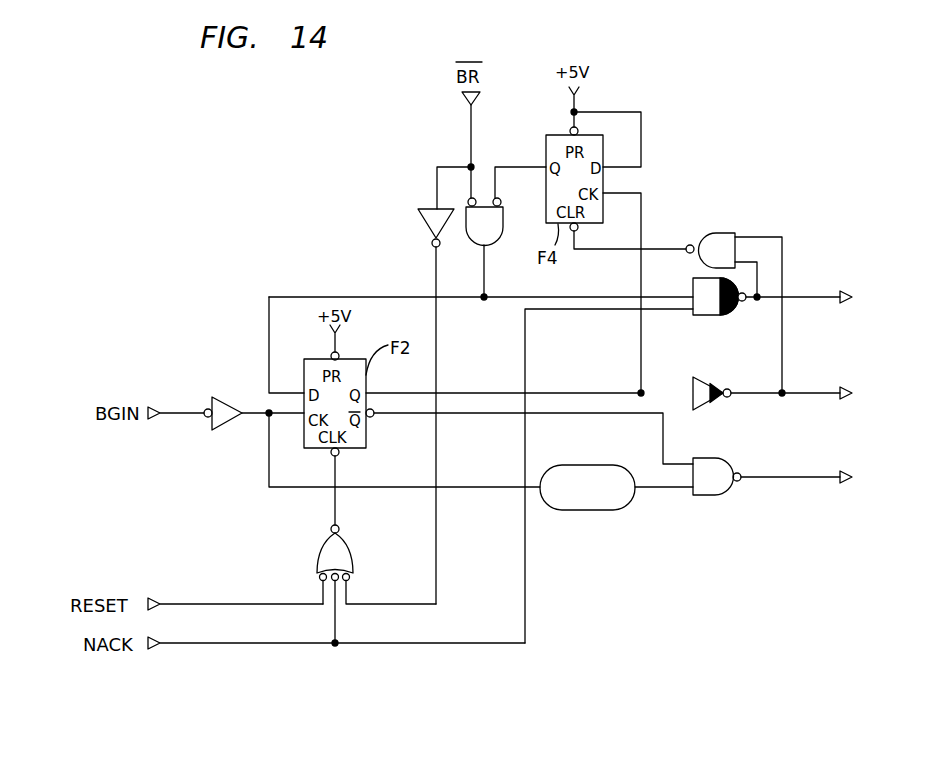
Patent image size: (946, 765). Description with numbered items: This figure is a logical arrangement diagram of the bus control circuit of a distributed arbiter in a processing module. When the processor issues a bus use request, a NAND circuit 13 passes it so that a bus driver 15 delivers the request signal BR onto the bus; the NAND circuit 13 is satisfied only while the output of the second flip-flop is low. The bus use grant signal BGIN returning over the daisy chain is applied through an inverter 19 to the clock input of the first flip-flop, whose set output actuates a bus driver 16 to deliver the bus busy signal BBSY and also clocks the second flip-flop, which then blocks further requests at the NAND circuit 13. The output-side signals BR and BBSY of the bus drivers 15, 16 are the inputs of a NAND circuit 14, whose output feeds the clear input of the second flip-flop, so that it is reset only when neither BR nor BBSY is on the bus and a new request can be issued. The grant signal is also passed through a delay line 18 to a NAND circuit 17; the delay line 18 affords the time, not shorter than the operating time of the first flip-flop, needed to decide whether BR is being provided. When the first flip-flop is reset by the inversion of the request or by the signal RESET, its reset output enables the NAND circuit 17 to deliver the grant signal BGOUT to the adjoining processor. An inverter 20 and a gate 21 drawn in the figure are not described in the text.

The NAND circuit 13 is at (498, 247).
The NAND circuit 14 is at (723, 232).
The bus driver 15 is at (717, 315).
The bus driver 16 is at (713, 408).
The NAND circuit 17 is at (705, 496).
The delay line 18 is at (607, 510).
The inverter 19 is at (227, 428).
The inverter 20 is at (425, 222).
The NOR gate 21 is at (353, 558).